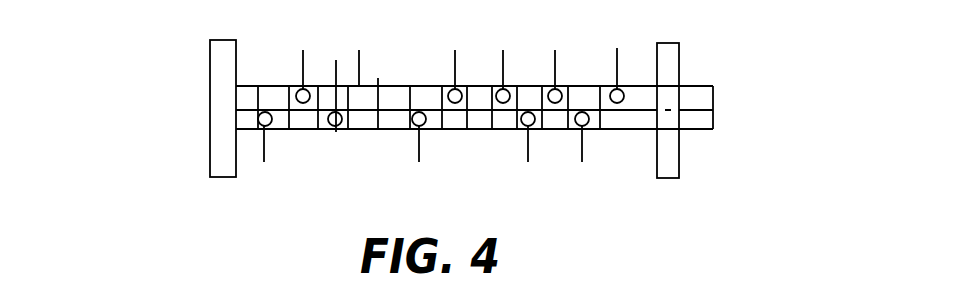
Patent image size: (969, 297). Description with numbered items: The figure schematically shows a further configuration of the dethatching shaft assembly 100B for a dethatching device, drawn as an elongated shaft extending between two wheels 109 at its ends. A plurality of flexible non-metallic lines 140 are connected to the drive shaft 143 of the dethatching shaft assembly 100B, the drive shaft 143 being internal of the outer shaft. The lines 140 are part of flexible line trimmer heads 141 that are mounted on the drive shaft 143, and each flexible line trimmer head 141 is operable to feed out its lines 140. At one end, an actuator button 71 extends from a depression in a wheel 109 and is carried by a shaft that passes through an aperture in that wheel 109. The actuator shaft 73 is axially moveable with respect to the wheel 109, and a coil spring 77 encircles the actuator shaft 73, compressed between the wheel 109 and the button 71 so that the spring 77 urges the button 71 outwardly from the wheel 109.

The dethatching shaft assembly 100B is at (182, 44).
The wheel 109 is at (220, 127).
The actuator button 71 is at (520, 153).
The coil spring 77 is at (700, 98).
The actuator shaft 73 is at (713, 117).
The drive shaft 143 is at (627, 110).
The flexible line trimmer heads 141 is at (390, 82).
The flexible non-metallic lines 140 is at (259, 158).